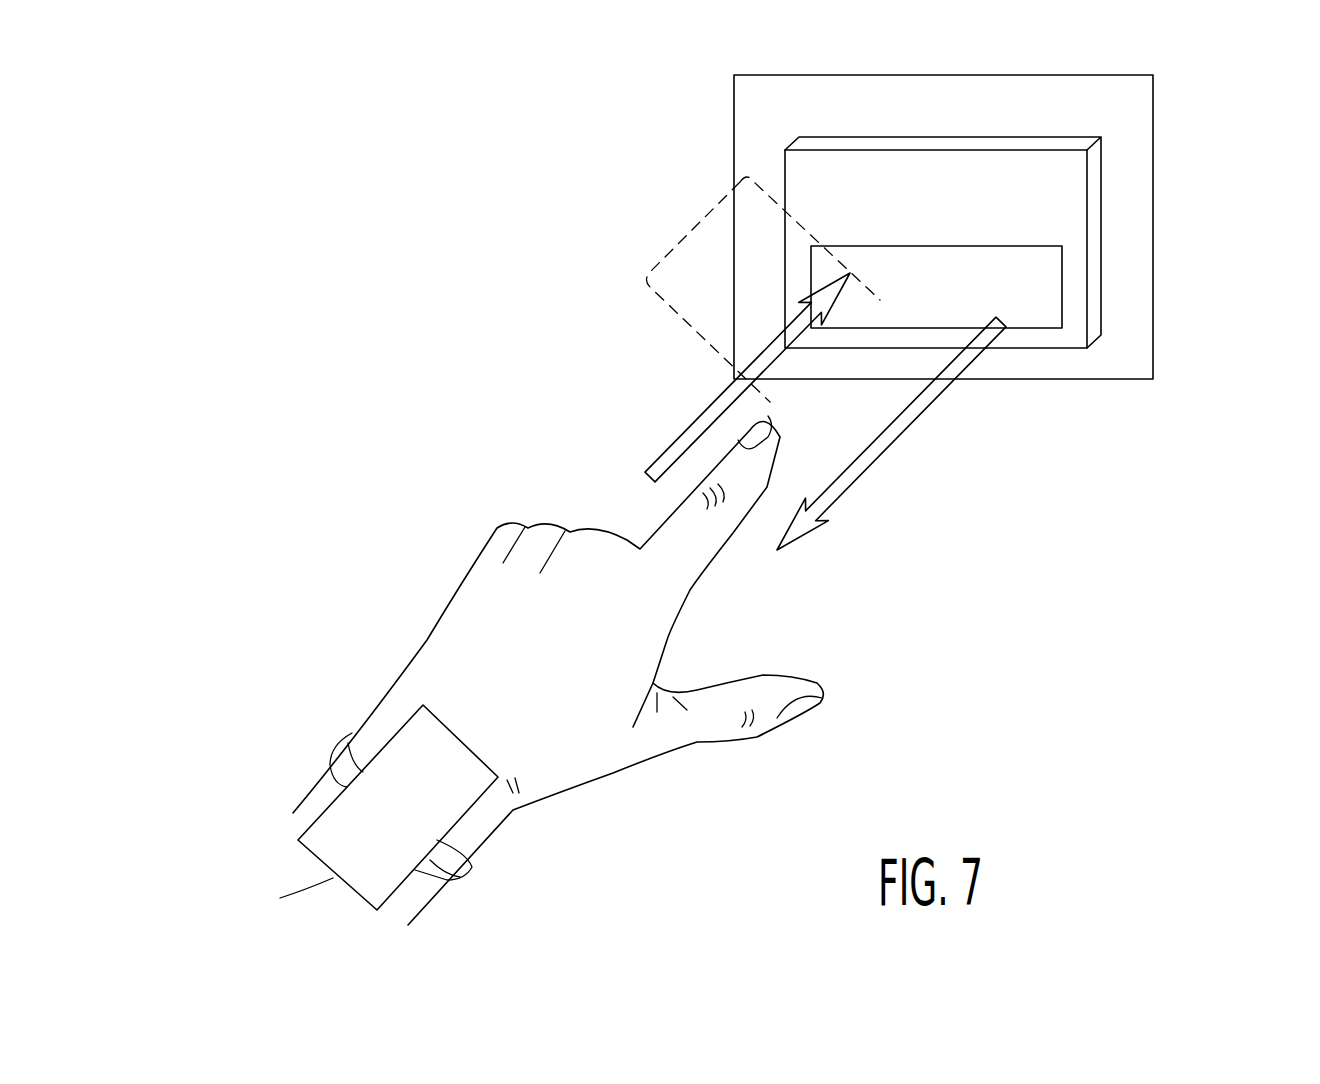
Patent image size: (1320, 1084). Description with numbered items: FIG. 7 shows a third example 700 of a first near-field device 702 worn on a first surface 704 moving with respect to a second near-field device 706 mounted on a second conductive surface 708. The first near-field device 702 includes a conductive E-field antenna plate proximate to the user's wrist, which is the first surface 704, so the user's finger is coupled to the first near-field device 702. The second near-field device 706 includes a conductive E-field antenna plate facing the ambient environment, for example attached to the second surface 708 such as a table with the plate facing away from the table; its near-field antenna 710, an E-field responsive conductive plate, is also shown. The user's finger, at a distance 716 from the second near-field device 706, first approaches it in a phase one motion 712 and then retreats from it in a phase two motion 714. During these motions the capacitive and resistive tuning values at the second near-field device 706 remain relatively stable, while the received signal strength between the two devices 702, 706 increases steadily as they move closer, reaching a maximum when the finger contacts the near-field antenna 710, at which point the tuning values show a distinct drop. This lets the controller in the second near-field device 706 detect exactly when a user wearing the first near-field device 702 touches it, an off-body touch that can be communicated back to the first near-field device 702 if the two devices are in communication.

The third example 700 is at (332, 293).
The first near-field device 702 is at (340, 878).
The first surface 704 is at (435, 628).
The second near-field device 706 is at (1075, 225).
The second conductive surface 708 is at (1153, 147).
The near-field antenna 710 is at (1050, 300).
The approaching (phase 1) 712 is at (667, 452).
The retreating (phase 2) 714 is at (892, 448).
The distance 716 is at (701, 224).